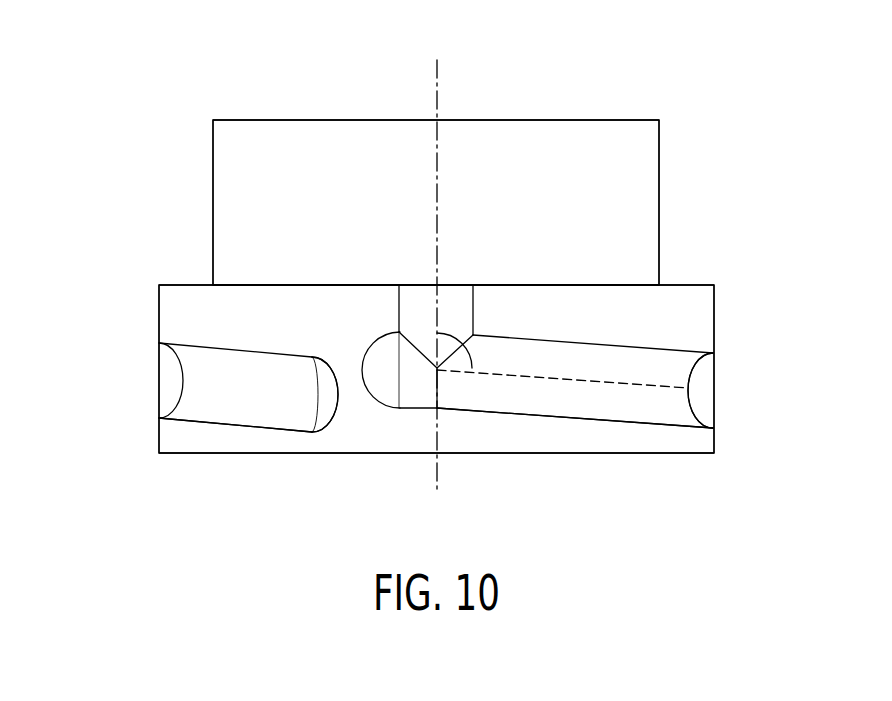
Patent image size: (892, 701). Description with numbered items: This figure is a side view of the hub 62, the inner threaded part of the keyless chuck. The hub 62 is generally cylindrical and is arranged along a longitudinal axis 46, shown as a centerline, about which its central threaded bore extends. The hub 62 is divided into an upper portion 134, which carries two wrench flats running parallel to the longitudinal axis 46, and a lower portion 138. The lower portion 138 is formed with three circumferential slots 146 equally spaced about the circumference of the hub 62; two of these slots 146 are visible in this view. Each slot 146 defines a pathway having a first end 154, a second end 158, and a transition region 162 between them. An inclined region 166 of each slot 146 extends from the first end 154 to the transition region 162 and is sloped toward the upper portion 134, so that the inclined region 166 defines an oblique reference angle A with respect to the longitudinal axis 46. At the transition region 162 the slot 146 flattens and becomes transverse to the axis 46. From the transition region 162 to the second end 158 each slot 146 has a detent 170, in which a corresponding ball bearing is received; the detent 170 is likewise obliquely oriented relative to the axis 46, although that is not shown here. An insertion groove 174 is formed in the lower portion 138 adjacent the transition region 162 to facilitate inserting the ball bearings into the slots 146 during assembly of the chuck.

The hub 62 is at (688, 85).
The longitudinal axis 46 is at (437, 90).
The upper portion 134 is at (659, 177).
The lower portion 138 is at (159, 312).
The circumferential slot 146 is at (180, 380).
The first end 154 is at (325, 408).
The inclined region 166 is at (222, 430).
The second end 158 is at (383, 387).
The insertion groove 174 is at (427, 308).
The transition region 162 is at (450, 330).
The detent 170 is at (398, 407).
The oblique reference angle A is at (478, 351).